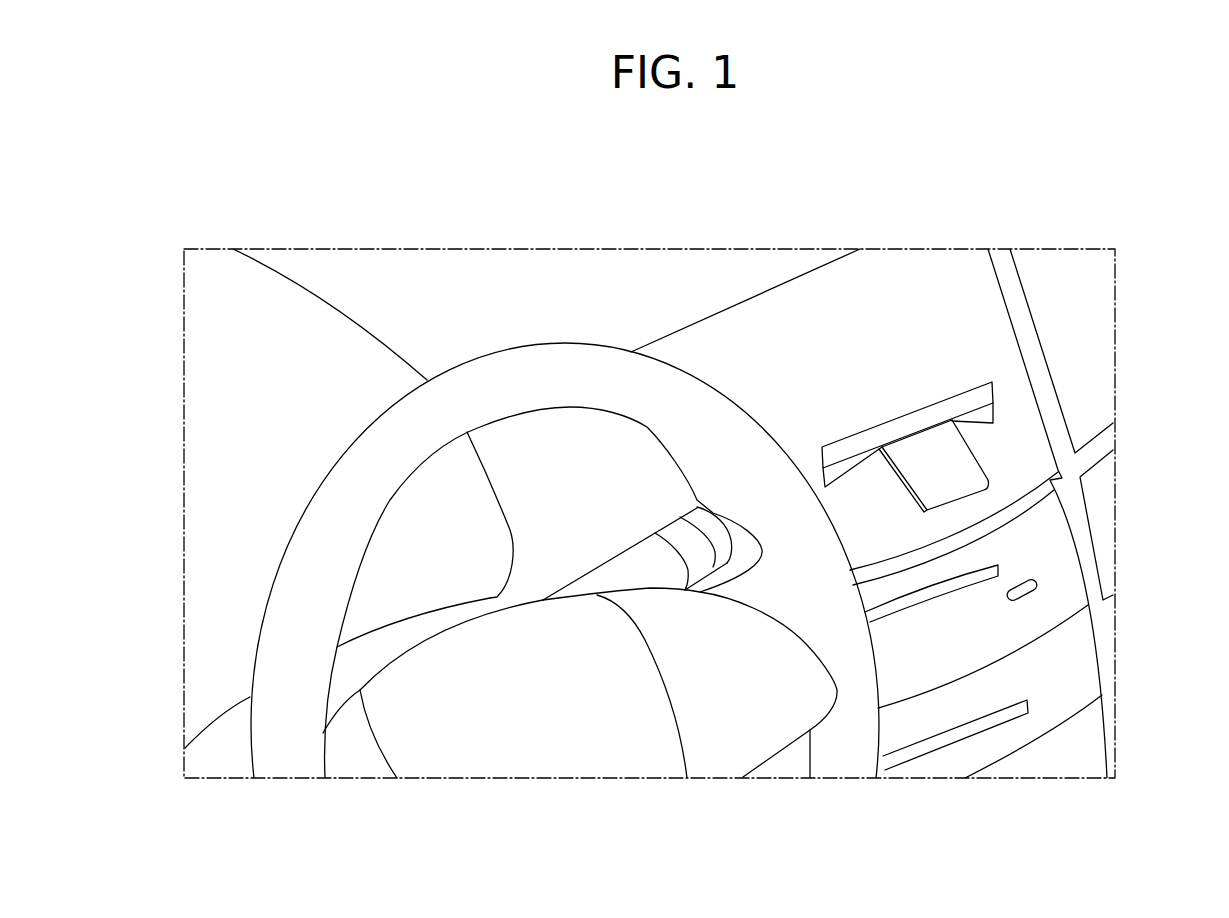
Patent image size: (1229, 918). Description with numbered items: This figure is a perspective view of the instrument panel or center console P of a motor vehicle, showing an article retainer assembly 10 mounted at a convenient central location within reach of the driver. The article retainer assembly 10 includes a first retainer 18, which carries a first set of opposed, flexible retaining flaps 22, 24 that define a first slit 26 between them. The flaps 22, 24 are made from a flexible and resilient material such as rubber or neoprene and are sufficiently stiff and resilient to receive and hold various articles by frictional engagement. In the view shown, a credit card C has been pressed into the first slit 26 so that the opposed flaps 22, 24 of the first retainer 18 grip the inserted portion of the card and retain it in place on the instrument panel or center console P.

The article retainer assembly 10 is at (943, 367).
The instrument panel or center console P is at (887, 297).
The first slit 26 is at (857, 440).
The flexible retaining flap 22 is at (963, 403).
The first retainer 18 is at (1003, 415).
The flexible retaining flap 24 is at (973, 428).
The credit card C is at (965, 480).